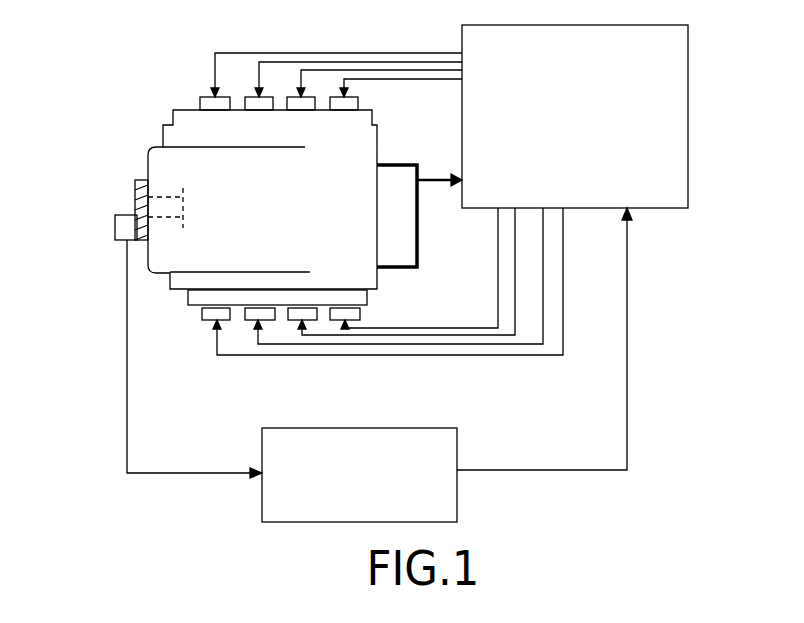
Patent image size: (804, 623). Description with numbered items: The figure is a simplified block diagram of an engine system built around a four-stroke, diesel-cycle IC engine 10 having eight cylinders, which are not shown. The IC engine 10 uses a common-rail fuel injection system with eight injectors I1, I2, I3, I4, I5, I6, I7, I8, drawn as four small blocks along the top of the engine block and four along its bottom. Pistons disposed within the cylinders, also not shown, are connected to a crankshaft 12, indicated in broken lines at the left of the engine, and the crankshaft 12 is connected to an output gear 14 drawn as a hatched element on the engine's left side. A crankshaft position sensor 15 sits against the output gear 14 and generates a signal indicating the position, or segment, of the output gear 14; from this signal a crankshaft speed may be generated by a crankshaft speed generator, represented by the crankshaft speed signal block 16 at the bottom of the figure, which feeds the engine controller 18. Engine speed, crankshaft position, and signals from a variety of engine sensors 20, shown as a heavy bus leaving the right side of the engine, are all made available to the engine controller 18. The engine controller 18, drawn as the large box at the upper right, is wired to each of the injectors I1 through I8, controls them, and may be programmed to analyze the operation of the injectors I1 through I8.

The IC engine 10 is at (140, 103).
The crankshaft 12 is at (157, 193).
The output gear 14 is at (145, 180).
The crankshaft position sensor 15 is at (120, 228).
The crankshaft speed signal 16 is at (293, 507).
The engine controller 18 is at (660, 88).
The engine sensors 20 is at (408, 248).
The injector I1 is at (208, 95).
The injector I2 is at (255, 95).
The injector I3 is at (300, 95).
The injector I4 is at (340, 95).
The injector I5 is at (208, 322).
The injector I6 is at (253, 322).
The injector I7 is at (293, 323).
The injector I8 is at (343, 320).